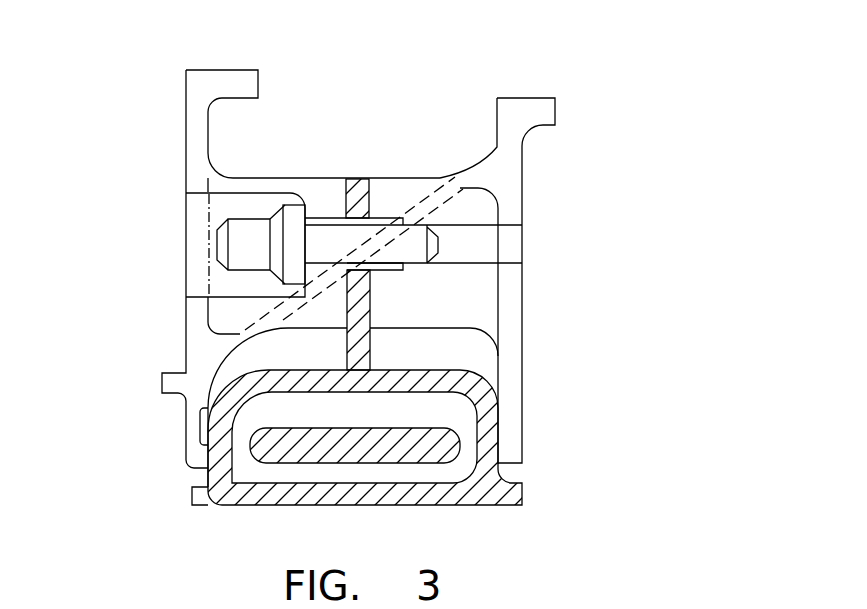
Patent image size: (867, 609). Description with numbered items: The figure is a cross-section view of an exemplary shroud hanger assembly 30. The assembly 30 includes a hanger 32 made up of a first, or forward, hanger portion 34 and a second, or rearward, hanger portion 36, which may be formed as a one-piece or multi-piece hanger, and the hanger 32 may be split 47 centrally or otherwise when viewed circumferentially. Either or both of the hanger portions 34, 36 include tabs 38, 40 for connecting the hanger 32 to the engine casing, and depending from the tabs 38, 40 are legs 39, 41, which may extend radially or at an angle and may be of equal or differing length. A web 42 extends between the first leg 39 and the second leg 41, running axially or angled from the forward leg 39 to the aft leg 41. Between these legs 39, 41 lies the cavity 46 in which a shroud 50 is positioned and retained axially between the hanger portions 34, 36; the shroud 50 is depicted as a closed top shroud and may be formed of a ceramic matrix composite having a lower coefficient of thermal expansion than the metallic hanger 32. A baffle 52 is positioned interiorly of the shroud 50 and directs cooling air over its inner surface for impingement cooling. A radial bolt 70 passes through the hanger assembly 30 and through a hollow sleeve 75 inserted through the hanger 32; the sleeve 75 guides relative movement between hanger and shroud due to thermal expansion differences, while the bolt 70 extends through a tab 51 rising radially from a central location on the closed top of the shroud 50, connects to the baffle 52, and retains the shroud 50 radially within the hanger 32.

The hanger assembly 30 is at (380, 289).
The hanger 32 is at (504, 109).
The first hanger portion 34 is at (182, 268).
The second hanger portion 36 is at (519, 305).
The tab 38 is at (239, 78).
The first leg 39 is at (193, 308).
The tab 40 is at (545, 113).
The second leg 41 is at (510, 355).
The web 42 is at (328, 178).
The cavity 46 is at (472, 299).
The split 47 is at (346, 308).
The shroud 50 is at (367, 467).
The tab 51 is at (358, 343).
The baffle 52 is at (283, 450).
The bolt 70 is at (240, 244).
The sleeve 75 is at (376, 216).